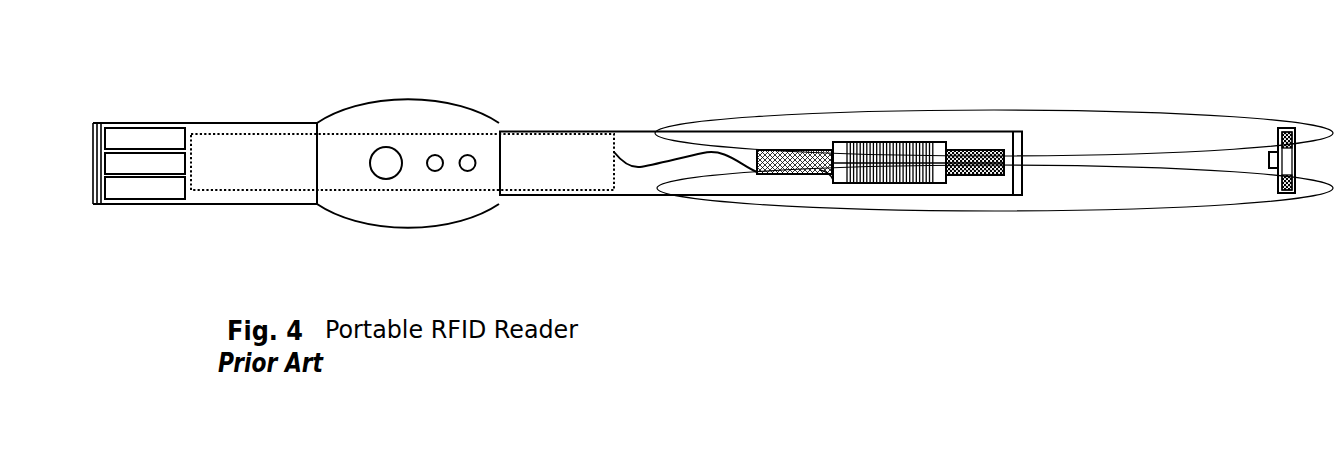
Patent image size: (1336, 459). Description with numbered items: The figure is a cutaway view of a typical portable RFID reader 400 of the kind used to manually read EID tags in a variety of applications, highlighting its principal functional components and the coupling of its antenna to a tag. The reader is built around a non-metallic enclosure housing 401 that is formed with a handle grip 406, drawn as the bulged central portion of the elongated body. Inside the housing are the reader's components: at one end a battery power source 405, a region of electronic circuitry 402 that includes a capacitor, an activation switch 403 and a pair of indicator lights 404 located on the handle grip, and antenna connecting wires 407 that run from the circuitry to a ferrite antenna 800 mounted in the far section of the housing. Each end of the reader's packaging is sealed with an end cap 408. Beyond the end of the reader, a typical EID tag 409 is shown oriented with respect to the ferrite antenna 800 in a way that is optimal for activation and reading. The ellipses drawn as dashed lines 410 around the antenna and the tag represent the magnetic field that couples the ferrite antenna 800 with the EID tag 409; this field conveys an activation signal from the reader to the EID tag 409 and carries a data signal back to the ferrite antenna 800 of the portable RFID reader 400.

The portable RFID reader 400 is at (572, 223).
The non-metallic enclosure housing 401 is at (632, 125).
The electronic circuitry 402 is at (532, 152).
The activation switch 403 is at (384, 158).
The indicator lights 404 is at (465, 158).
The battery power source 405 is at (163, 138).
The handle grip 406 is at (250, 210).
The antenna connecting wires 407 is at (710, 160).
The end cap 408 is at (102, 217).
The EID tag 409 is at (1288, 120).
The dashed lines 410 is at (1115, 198).
The ferrite antenna 800 is at (887, 148).